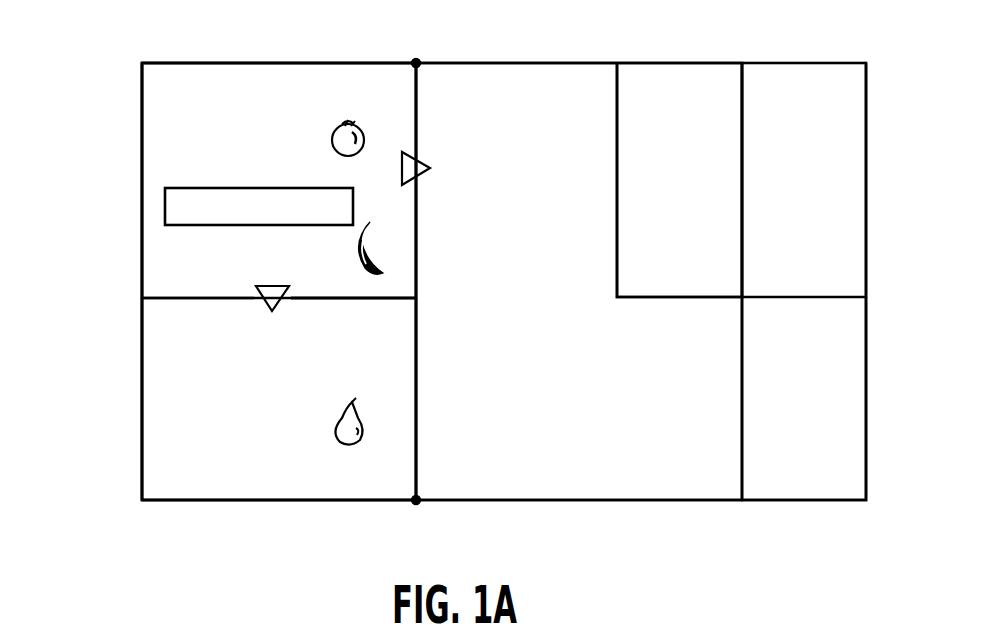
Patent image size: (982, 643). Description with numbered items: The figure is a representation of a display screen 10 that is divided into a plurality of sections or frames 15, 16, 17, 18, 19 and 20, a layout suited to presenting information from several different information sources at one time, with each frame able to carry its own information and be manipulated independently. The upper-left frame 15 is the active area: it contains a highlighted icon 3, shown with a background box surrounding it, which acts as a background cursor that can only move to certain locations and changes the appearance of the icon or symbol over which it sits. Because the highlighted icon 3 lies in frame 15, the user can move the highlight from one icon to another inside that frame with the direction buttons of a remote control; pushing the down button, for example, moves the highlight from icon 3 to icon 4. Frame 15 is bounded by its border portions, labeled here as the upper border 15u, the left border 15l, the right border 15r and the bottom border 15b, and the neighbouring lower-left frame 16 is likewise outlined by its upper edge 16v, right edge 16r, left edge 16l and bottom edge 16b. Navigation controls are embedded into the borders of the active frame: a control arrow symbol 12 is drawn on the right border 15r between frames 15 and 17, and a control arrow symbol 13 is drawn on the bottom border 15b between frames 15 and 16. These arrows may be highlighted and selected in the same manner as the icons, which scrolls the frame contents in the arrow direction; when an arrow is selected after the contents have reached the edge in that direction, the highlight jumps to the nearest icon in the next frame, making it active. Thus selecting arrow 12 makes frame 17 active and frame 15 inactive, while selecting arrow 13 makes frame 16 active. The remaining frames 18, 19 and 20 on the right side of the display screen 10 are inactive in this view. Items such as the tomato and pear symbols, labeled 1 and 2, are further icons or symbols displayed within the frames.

The tomato icon 1 is at (368, 125).
The first list entry WWW.NJ.COM 2 is at (178, 165).
The icon 3 is at (165, 212).
The icon 4 is at (355, 250).
The display screen 10 is at (742, 63).
The control arrow symbol 12 is at (428, 160).
The control arrow symbol 13 is at (290, 302).
The frame 15 is at (168, 107).
The active area upper boundary 15u is at (280, 63).
The active area left boundary 15l is at (142, 198).
The right border portion 15r is at (418, 250).
The bottom border portion 15b is at (190, 298).
The frame 16 is at (271, 444).
The region 16 upper boundary 16v is at (365, 298).
The region 16 right boundary 16r is at (418, 352).
The region 16 left boundary 16l is at (142, 447).
The region 16 bottom boundary 16b is at (250, 500).
The frame 17 is at (583, 442).
The frame 18 is at (688, 189).
The frame 19 is at (819, 189).
The frame 20 is at (819, 442).